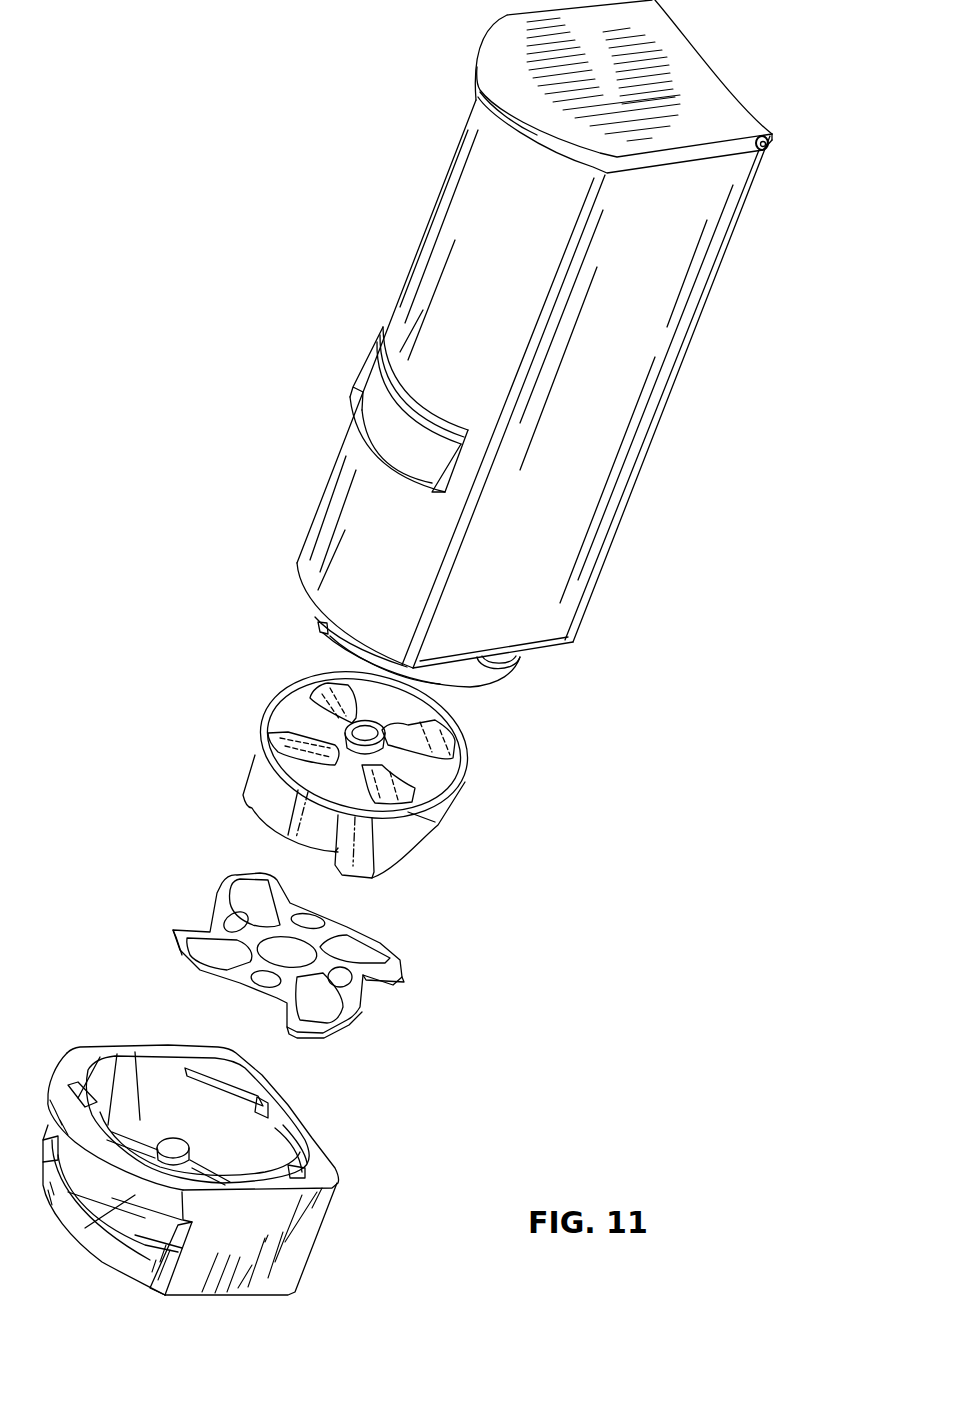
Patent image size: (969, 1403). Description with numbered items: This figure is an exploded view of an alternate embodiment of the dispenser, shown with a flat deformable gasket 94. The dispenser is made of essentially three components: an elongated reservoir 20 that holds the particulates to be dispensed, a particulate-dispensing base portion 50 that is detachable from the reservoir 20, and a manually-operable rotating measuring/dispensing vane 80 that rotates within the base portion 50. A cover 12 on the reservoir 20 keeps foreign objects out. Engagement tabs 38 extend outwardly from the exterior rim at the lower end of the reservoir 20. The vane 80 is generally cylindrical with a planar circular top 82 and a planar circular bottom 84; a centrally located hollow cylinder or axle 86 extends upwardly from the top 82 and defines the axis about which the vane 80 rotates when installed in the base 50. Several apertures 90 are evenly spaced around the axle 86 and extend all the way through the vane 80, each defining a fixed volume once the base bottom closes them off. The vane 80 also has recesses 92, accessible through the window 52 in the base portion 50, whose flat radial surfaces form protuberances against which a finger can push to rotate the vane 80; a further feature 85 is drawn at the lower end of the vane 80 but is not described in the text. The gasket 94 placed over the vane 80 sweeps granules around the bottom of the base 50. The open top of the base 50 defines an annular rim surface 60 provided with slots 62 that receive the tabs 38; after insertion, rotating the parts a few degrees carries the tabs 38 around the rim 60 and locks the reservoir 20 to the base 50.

The cover 12 is at (500, 37).
The reservoir 20 is at (528, 349).
The engagement tabs 38 is at (318, 626).
The measuring/dispensing vane 80 is at (383, 782).
The top of the vane 82 is at (278, 712).
The bottom of the vane 84 is at (338, 834).
The locking tab 85 is at (373, 877).
The cylinder or hollow axle 86 is at (398, 711).
The apertures 90 is at (282, 737).
The recesses 92 is at (310, 830).
The gasket 94 is at (360, 1012).
The base portion 50 is at (193, 1148).
The window 52 is at (143, 1237).
The annular rim surface 60 is at (197, 1062).
The slots 62 is at (80, 1100).